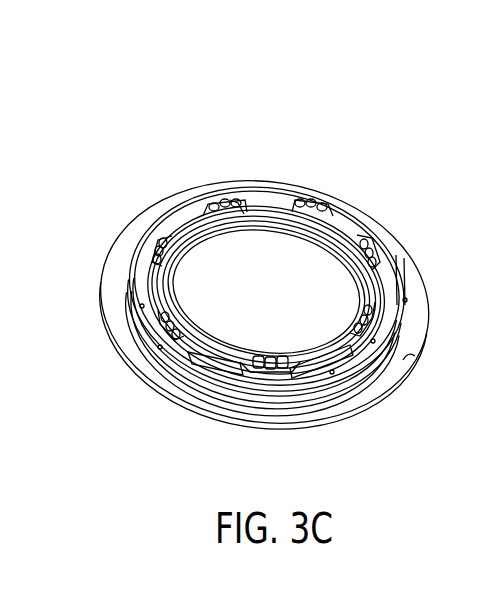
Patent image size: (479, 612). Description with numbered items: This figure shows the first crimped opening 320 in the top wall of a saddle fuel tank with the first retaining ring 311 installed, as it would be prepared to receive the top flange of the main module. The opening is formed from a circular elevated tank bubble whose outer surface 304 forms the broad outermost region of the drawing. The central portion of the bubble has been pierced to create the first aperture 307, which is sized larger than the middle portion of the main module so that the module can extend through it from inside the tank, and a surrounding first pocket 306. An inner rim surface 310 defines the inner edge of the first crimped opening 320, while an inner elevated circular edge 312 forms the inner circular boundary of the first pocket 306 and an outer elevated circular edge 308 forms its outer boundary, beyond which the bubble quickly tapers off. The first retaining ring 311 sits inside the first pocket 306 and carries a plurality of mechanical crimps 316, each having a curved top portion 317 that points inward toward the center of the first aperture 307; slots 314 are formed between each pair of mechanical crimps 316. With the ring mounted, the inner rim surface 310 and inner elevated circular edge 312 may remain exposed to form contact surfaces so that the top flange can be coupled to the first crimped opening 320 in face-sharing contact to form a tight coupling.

The first crimped opening 320 is at (272, 82).
The outer surface 304 is at (420, 352).
The first pocket 306 is at (343, 227).
The first aperture 307 is at (277, 278).
The outer elevated circular edge 308 is at (395, 258).
The inner rim surface 310 is at (347, 254).
The first retaining ring 311 is at (201, 360).
The inner elevated circular edge 312 is at (168, 247).
The slots 314 is at (345, 345).
The mechanical crimps 316 is at (273, 357).
The curved top portion 317 is at (237, 203).